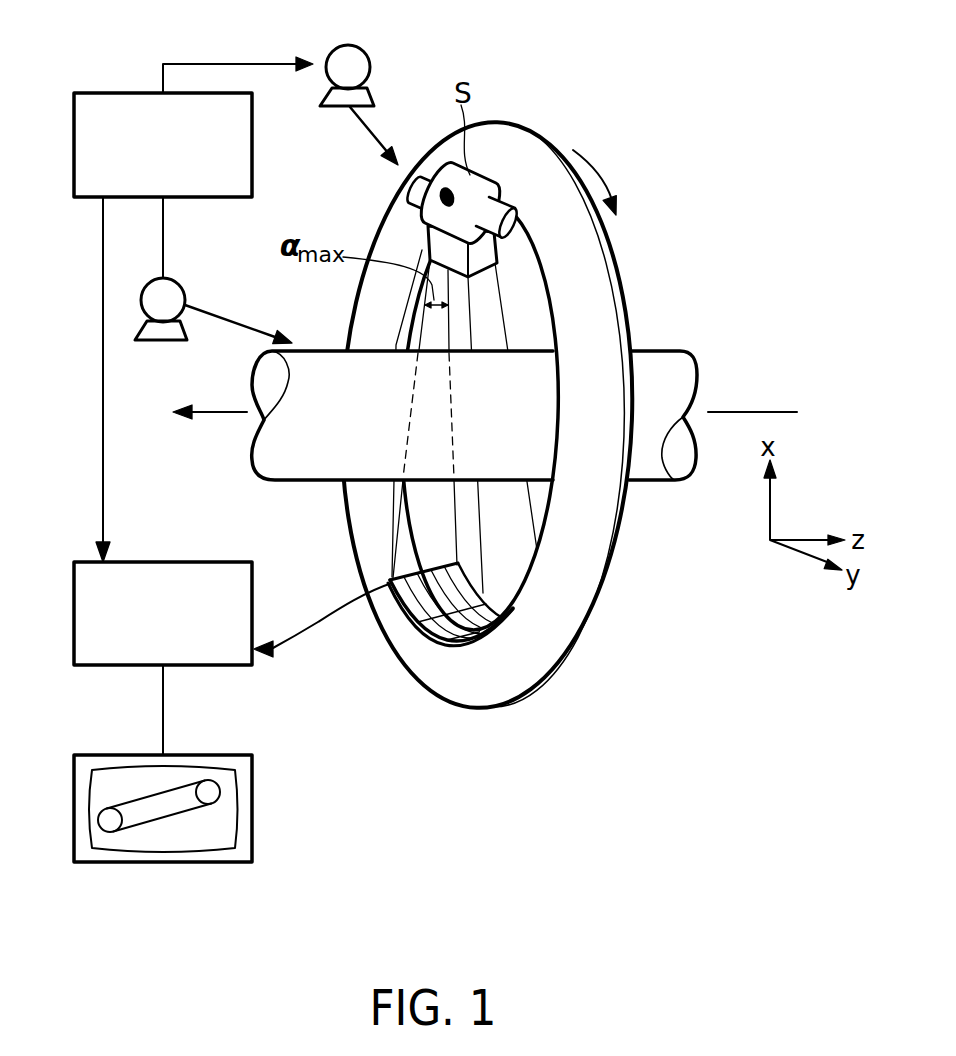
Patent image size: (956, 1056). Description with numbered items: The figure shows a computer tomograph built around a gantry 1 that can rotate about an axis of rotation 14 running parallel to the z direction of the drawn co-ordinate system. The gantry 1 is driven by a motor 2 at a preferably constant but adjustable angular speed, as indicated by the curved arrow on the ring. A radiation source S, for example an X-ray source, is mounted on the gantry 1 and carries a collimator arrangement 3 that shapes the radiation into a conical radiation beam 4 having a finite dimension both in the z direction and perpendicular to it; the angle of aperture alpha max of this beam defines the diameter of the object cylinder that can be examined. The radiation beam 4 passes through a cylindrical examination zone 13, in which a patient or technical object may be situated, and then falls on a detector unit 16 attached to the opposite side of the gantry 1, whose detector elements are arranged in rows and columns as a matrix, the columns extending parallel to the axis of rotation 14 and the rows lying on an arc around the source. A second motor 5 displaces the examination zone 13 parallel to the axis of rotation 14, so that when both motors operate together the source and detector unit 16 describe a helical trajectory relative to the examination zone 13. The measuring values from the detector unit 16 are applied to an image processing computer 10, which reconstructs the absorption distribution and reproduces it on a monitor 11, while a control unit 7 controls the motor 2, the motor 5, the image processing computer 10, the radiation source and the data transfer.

The gantry 1 is at (612, 570).
The motor 2 is at (369, 62).
The collimator arrangement 3 is at (488, 262).
The radiation beam 4 is at (479, 530).
The motor 5 is at (184, 292).
The control unit 7 is at (100, 93).
The image processing computer 10 is at (214, 562).
The monitor 11 is at (214, 755).
The examination zone 13 is at (312, 365).
The axis of rotation 14 is at (207, 412).
The detector unit 16 is at (421, 633).